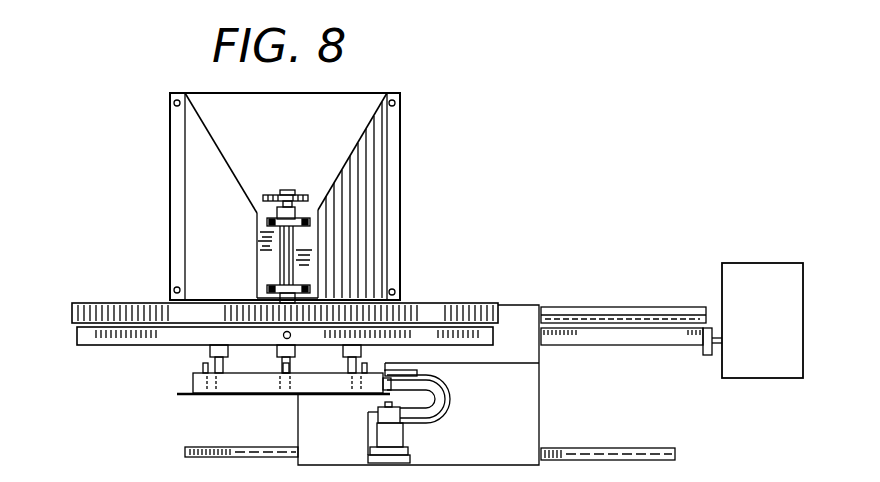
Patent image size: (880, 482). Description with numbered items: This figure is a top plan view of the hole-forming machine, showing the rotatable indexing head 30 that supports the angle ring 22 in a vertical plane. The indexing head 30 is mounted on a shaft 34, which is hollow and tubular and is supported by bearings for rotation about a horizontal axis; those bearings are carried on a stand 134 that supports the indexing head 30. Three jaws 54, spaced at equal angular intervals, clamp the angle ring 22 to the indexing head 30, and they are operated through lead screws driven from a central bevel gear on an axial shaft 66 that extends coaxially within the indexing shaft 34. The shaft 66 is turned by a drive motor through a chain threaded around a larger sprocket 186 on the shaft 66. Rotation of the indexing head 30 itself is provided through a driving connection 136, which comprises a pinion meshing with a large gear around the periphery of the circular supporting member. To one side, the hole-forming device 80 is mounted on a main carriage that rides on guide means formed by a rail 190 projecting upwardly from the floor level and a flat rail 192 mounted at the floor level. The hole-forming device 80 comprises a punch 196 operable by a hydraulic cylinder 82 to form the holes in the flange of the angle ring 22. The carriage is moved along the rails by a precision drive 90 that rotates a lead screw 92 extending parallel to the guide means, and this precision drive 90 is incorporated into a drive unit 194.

The angle ring 22 is at (177, 393).
The indexing head 30 is at (70, 321).
The shaft 34 is at (260, 240).
The jaws 54 is at (358, 362).
The axial shaft 66 is at (277, 208).
The hole-forming device 80 is at (458, 396).
The hydraulic cylinder 82 is at (382, 434).
The precision drive 90 is at (738, 256).
The lead screw 92 is at (618, 347).
The stand 134 is at (372, 174).
The driving connection 136 is at (297, 281).
The sprocket 186 is at (284, 194).
The rail 190 is at (607, 312).
The rail 192 is at (600, 447).
The drive unit 194 is at (762, 370).
The punch 196 is at (383, 403).